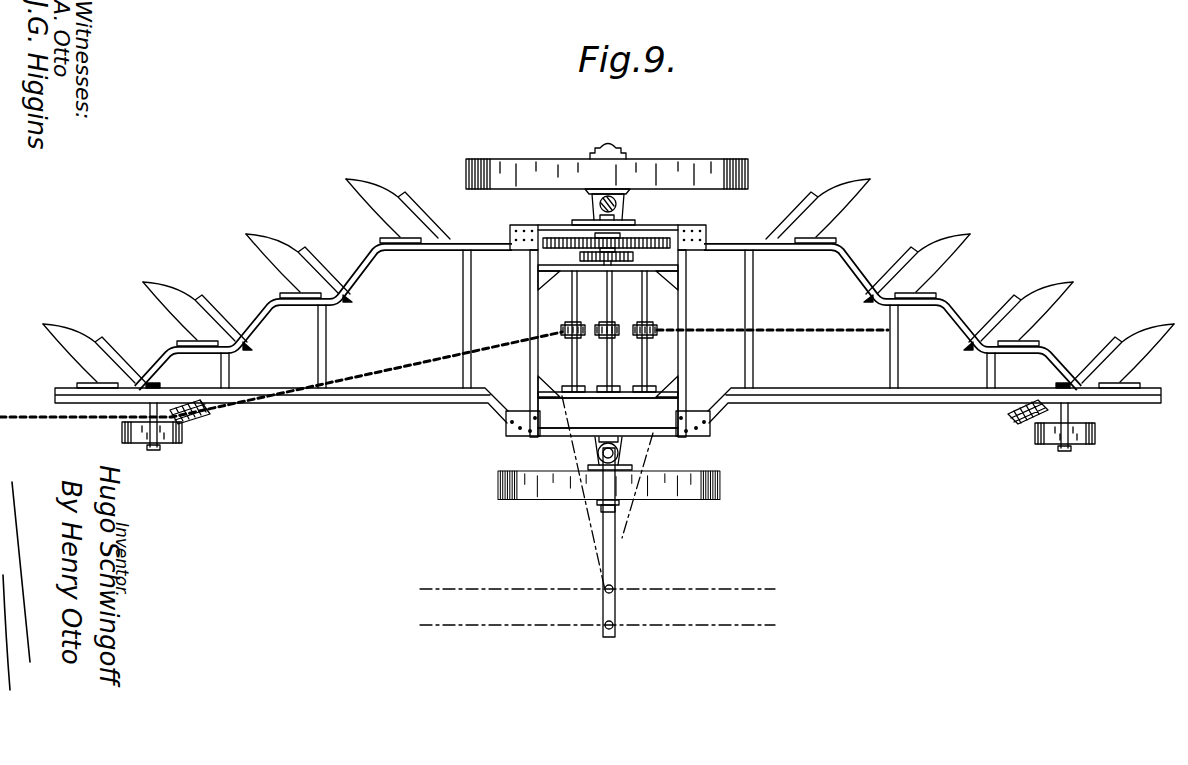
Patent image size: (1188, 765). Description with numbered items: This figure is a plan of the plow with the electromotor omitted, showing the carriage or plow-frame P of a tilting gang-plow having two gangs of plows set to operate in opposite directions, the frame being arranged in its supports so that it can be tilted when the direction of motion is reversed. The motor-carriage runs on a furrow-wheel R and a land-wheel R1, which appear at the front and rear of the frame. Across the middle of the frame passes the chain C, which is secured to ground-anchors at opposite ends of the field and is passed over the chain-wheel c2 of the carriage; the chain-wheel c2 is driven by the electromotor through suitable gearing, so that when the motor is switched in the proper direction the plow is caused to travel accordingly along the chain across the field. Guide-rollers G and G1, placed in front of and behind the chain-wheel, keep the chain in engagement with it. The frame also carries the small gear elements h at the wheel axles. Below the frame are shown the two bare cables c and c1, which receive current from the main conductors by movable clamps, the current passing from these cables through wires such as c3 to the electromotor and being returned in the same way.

The plow-frame P is at (608, 413).
The furrow-wheel R is at (676, 176).
The land-wheel R1 is at (706, 500).
The guide-roller G is at (565, 327).
The guide-roller G1 is at (644, 325).
The chain-wheel c2 is at (628, 527).
The wire c3 is at (590, 522).
The cable c is at (546, 594).
The cable c1 is at (548, 626).
The chain C is at (787, 344).
The bevel gear and ground wheel h is at (200, 420).